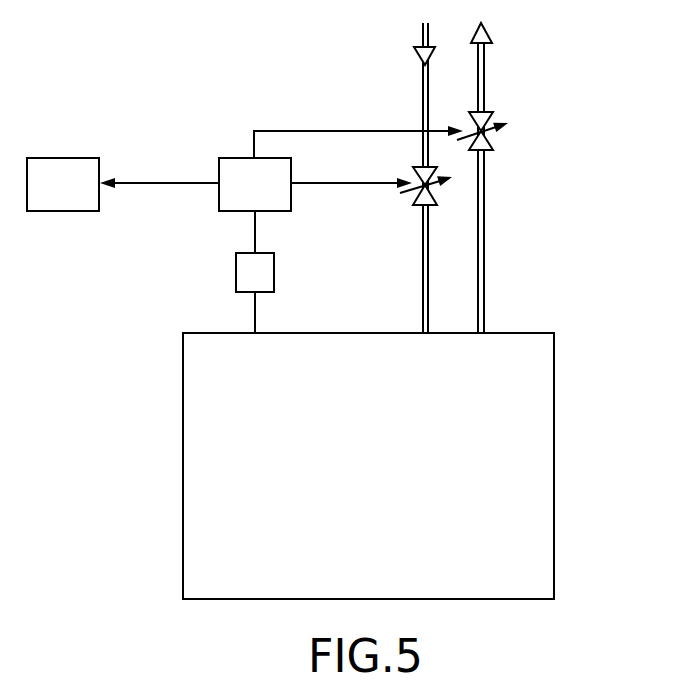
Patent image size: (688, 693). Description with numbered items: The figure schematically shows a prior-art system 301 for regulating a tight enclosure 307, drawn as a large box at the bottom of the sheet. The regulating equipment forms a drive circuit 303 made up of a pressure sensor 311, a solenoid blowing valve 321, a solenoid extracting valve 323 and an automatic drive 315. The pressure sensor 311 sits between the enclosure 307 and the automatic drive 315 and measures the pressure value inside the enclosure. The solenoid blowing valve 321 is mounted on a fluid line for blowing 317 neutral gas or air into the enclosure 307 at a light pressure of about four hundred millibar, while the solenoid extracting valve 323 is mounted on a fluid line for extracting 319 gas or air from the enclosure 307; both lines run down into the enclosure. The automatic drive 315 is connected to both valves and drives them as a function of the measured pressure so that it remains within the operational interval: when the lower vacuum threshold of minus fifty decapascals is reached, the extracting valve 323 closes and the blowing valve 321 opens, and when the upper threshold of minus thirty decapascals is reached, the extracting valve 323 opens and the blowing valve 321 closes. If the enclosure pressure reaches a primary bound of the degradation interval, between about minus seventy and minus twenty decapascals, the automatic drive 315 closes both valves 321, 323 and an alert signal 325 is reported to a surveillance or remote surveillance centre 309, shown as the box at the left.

The system 301 is at (100, 360).
The drive circuit 303 is at (312, 109).
The tight enclosure 307 is at (544, 488).
The surveillance or remote surveillance centre 309 is at (50, 163).
The pressure sensor 311 is at (243, 265).
The automatic drive 315 is at (233, 163).
The fluid line for blowing 317 is at (425, 85).
The fluid line for extracting 319 is at (482, 85).
The solenoid blowing valve 321 is at (414, 200).
The solenoid extracting valve 323 is at (494, 143).
The alert signal 325 is at (160, 182).